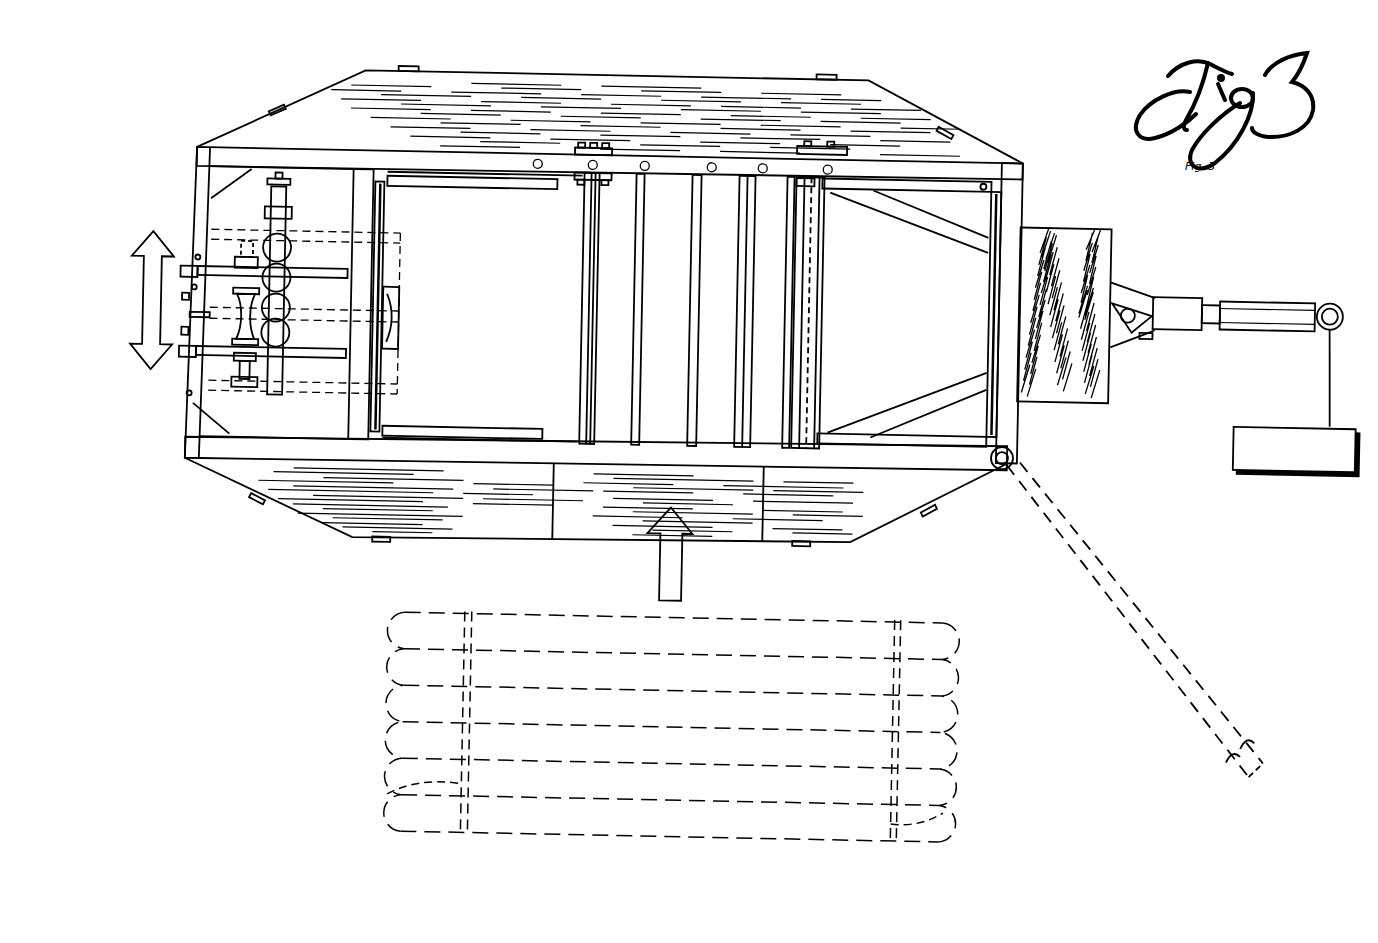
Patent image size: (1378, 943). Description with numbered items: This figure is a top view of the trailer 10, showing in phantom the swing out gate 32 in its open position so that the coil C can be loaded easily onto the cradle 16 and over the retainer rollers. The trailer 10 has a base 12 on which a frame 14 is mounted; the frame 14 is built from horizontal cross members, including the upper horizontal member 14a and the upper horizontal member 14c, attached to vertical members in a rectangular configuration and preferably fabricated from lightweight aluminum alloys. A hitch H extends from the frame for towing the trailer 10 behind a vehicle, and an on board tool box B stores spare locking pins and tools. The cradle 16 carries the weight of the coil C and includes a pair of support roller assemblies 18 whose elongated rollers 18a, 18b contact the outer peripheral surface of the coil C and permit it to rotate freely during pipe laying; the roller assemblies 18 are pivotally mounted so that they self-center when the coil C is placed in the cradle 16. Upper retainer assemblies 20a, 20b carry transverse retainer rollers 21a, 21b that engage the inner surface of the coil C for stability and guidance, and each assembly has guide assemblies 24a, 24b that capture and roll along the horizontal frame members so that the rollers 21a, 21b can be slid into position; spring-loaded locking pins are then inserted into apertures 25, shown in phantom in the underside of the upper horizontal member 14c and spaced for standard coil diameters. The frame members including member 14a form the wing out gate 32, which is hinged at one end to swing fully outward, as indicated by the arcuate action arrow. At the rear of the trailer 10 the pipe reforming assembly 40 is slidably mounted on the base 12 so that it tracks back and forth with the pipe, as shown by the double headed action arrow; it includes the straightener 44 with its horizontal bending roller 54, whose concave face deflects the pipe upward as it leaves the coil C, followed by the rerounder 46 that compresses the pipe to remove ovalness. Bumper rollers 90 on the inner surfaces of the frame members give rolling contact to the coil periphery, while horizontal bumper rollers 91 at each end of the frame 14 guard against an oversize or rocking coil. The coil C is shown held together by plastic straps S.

The trailer 10 is at (974, 99).
The base 12 is at (871, 111).
The frame 14 is at (1016, 199).
The horizontal cross member 14a is at (439, 450).
The upper horizontal member 14c is at (490, 159).
The cradle 16 is at (603, 442).
The support roller assembly 18 is at (701, 239).
The elongated roller 18a is at (643, 276).
The elongated roller 18b is at (745, 266).
The retainer roller assembly 20a is at (555, 283).
The retainer roller assembly 20b is at (851, 305).
The transverse retainer roller 21a is at (577, 352).
The transverse retainer roller 21b is at (826, 360).
The guide assembly 24a is at (588, 142).
The guide assembly 24b is at (782, 158).
The apertures 25 is at (537, 150).
The wing out gate 32 is at (1082, 508).
The pipe reforming assembly 40 is at (185, 378).
The straightener 44 is at (222, 260).
The rerounder 46 is at (277, 404).
The horizontal bending roller 54 is at (403, 318).
The bumper rollers 90 is at (429, 172).
The horizontal bumper rollers 91 is at (381, 209).
The tool box B is at (1092, 227).
The hitch H is at (1264, 314).
The coil C is at (380, 737).
The plastic straps S is at (403, 786).